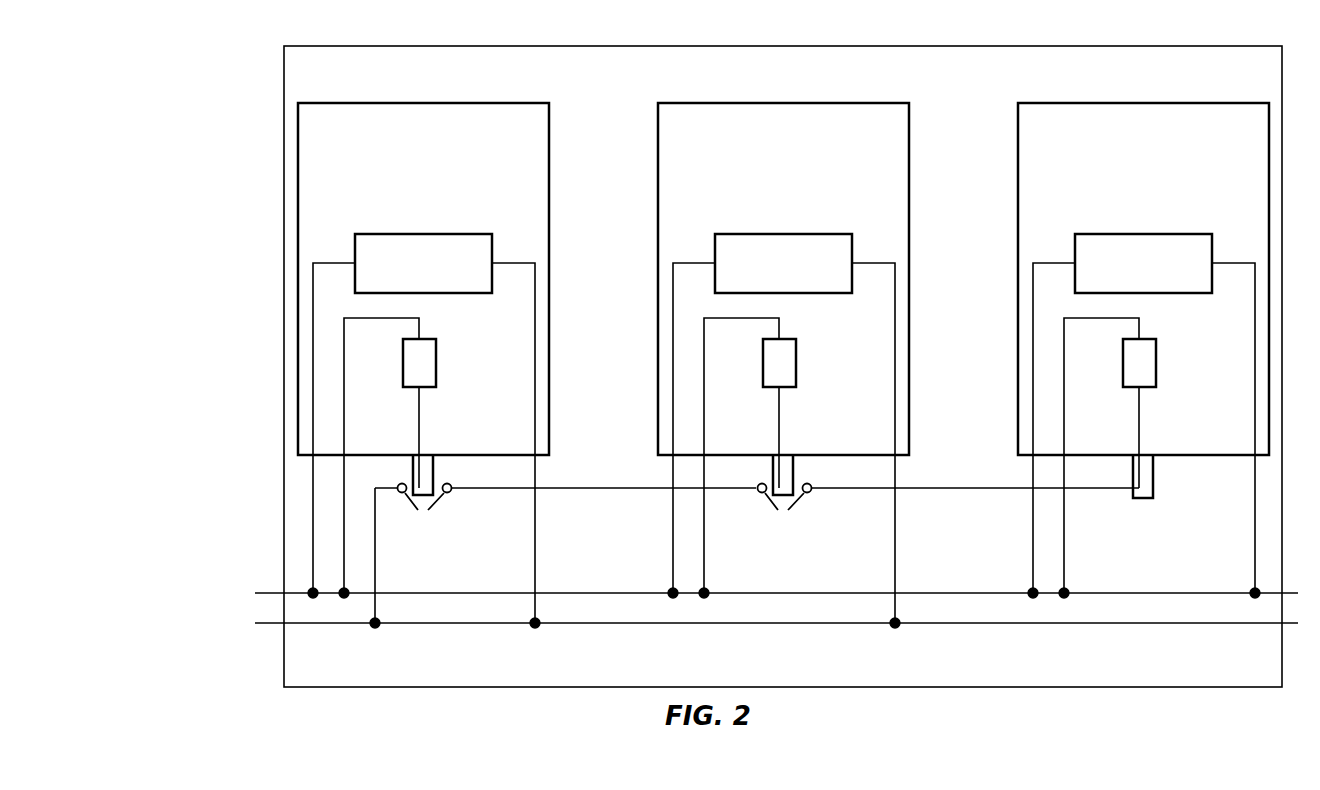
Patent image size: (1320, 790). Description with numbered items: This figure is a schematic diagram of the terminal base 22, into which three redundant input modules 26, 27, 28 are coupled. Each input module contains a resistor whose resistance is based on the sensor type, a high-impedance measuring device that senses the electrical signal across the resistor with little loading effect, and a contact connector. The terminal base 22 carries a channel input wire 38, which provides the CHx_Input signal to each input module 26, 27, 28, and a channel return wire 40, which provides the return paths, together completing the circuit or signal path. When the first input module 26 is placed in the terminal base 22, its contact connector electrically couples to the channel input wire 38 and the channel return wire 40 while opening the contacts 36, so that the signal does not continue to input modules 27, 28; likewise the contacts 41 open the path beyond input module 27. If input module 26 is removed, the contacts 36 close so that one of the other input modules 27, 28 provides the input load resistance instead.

The terminal base 22 is at (783, 46).
The first input module 26 is at (428, 103).
The input module 27 is at (788, 103).
The input module 28 is at (1148, 103).
The contacts 36 is at (412, 503).
The channel input wire 38 is at (272, 592).
The channel return wire 40 is at (272, 625).
The contacts 41 is at (772, 503).